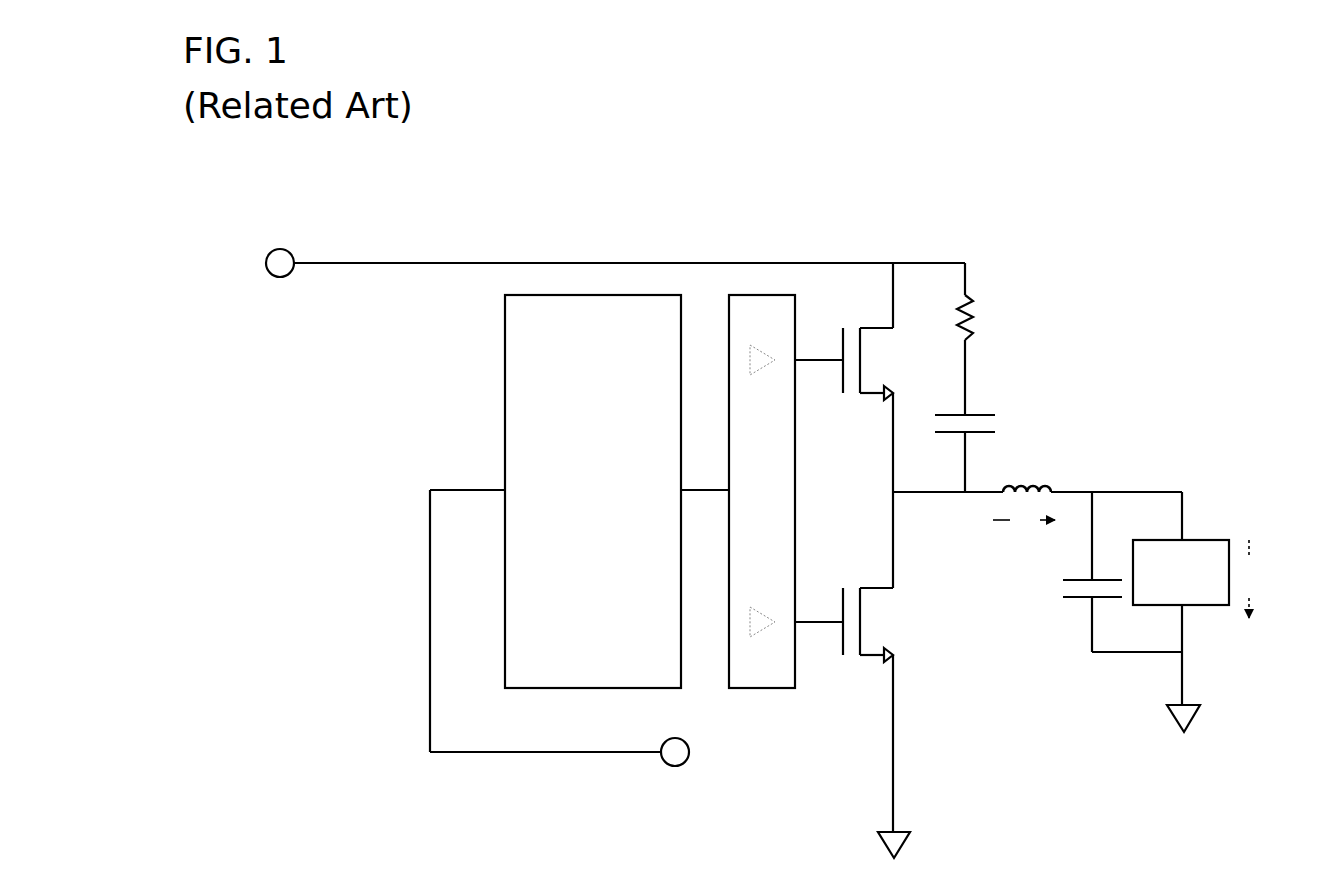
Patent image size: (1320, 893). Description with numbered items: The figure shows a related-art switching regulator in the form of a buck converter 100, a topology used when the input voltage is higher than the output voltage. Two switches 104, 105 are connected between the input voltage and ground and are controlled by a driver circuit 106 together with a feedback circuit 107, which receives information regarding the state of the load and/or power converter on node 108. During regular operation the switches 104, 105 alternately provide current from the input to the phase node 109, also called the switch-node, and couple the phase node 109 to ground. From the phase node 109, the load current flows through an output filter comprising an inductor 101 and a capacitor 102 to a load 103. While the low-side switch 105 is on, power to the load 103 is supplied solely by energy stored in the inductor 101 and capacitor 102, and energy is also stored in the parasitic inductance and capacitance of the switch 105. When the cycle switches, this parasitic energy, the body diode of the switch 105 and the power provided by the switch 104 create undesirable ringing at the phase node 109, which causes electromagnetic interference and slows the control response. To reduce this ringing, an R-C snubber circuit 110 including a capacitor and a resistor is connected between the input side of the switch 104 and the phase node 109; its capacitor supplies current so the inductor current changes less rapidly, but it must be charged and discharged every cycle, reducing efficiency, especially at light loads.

The buck converter 100 is at (249, 189).
The inductor 101 is at (1054, 476).
The capacitor 102 is at (1056, 620).
The load 103 is at (1205, 589).
The switch 104 is at (867, 360).
The switch 105 is at (877, 622).
The driver circuit 106 is at (788, 504).
The feedback circuit 107 is at (619, 504).
The node 108 is at (687, 770).
The phase node 109 is at (881, 513).
The R-C snubber circuit 110 is at (1020, 358).